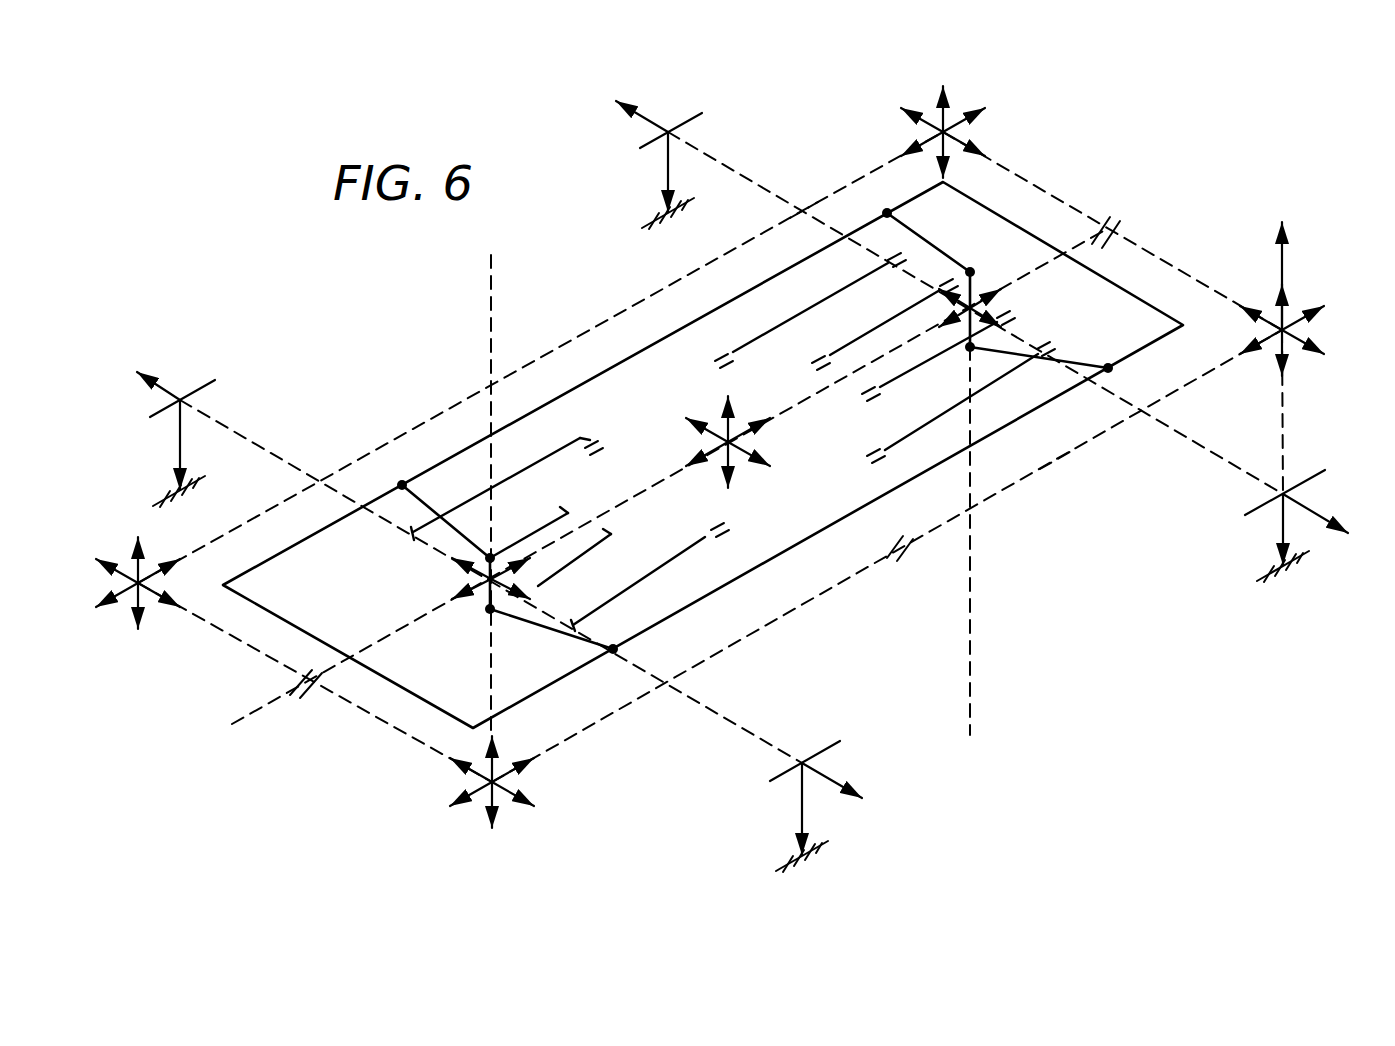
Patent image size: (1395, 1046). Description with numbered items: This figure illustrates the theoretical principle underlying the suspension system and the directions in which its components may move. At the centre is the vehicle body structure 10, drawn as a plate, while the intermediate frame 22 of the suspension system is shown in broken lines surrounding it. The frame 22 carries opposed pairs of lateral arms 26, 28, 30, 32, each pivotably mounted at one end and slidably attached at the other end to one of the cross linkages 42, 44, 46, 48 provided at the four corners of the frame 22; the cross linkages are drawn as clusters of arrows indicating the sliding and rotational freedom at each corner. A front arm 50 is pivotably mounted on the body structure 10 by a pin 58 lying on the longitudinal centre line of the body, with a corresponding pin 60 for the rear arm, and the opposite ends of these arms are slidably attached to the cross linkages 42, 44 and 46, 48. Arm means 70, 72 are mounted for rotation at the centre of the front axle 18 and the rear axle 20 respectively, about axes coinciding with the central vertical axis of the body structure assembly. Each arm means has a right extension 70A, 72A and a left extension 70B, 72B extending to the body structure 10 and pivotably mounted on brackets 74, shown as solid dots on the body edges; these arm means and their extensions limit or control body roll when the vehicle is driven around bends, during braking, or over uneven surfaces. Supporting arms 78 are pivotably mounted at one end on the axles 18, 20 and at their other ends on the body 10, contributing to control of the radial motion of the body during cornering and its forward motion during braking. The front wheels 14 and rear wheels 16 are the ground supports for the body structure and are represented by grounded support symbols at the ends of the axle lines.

The vehicle chassis/body structure 10 is at (688, 323).
The front tired road wheels 14 is at (180, 432).
The rear tired road wheels 16 is at (668, 172).
The front axle 18 is at (740, 720).
The rear axle 20 is at (1200, 445).
The intermediate frame 22 is at (886, 560).
The lateral arm 26 is at (460, 402).
The lateral arm 28 is at (603, 719).
The lateral arm 30 is at (810, 207).
The lateral arm 32 is at (1062, 456).
The cross linkage 42 is at (132, 572).
The cross linkage 44 is at (484, 797).
The cross linkage 46 is at (950, 120).
The cross linkage 48 is at (1292, 318).
The front arm 50 is at (414, 742).
The pin 58 is at (333, 672).
The pin 60 is at (1100, 240).
The arm means 70 is at (486, 596).
The right pivoted extension 70A is at (430, 508).
The left pivoted extension 70B is at (545, 628).
The arm means 72 is at (972, 275).
The right pivoted extension 72A is at (925, 236).
The left pivoted extension 72B is at (1007, 353).
The bracket 74 is at (402, 485).
The supporting arm 78 is at (555, 450).